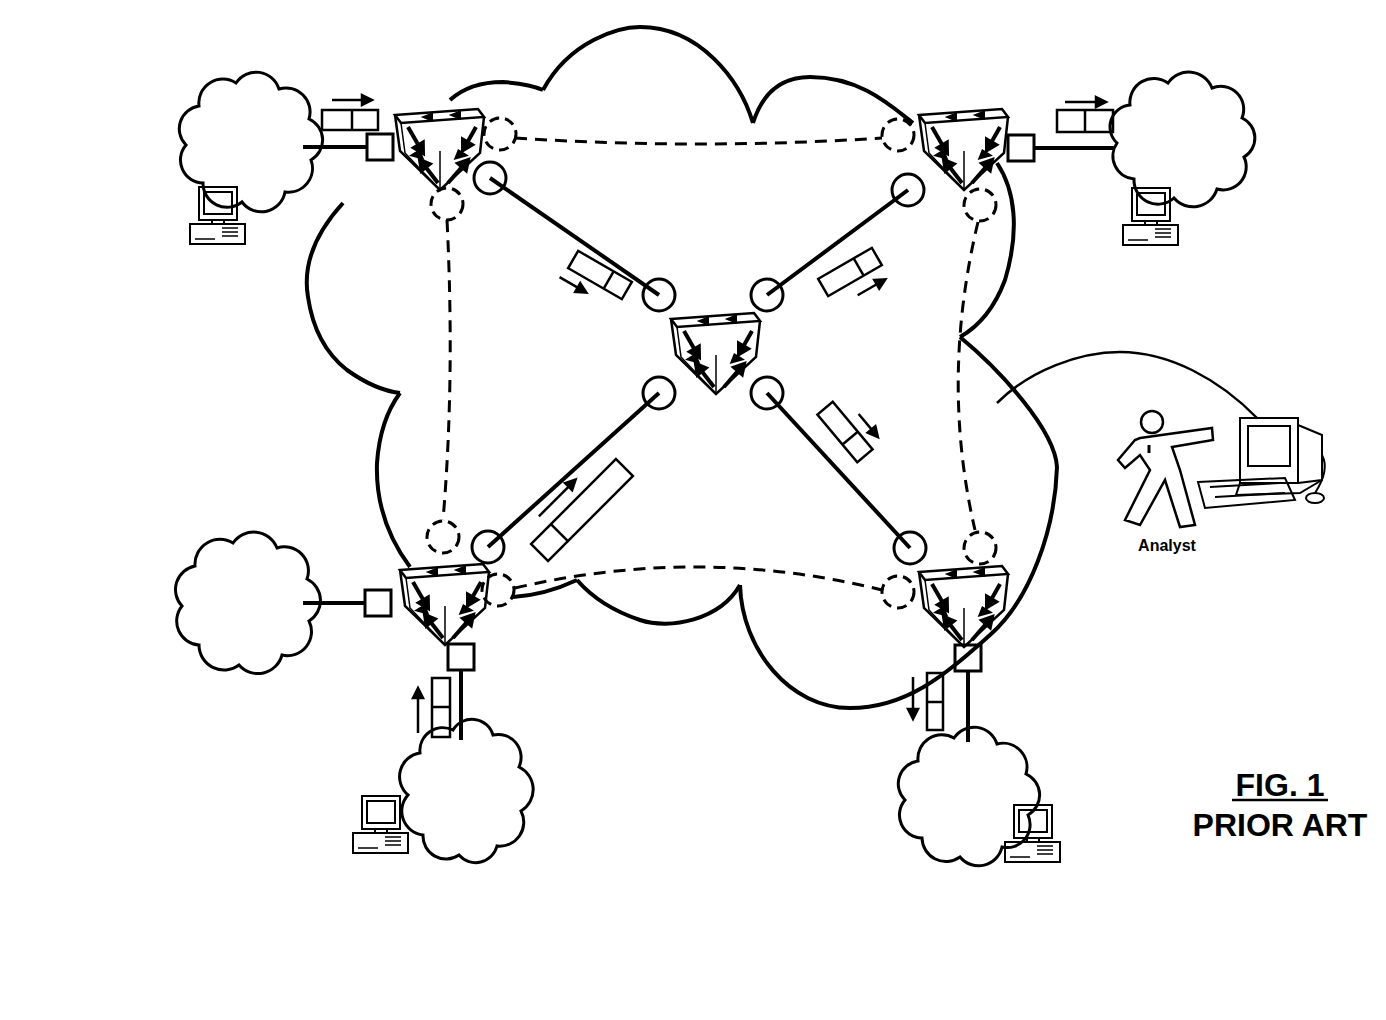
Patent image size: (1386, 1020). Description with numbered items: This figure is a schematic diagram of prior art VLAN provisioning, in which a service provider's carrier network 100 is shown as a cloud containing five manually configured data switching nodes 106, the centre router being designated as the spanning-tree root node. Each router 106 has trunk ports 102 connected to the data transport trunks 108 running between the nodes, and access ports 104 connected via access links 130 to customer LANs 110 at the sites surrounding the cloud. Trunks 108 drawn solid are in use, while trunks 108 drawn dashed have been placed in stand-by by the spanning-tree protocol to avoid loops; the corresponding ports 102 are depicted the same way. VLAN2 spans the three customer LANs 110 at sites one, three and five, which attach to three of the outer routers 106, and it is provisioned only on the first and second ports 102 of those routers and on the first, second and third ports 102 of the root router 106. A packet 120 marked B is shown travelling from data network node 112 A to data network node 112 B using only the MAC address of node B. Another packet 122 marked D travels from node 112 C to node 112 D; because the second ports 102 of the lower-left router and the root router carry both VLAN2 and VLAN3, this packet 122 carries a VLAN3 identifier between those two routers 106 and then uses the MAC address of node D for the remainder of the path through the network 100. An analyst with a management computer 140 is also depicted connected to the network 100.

The service provider carrier network 100 is at (370, 380).
The trunk port 102 is at (518, 135).
The access port 104 is at (392, 132).
The data switching node 106 is at (440, 105).
The data transport trunk 108 is at (635, 142).
The customer LAN 110 is at (215, 100).
The data network node 112 is at (192, 232).
The data packet 120 is at (323, 105).
The data packet with VLAN identifier 122 is at (822, 408).
The access link 130 is at (322, 150).
The analyst computer 140 is at (1285, 505).